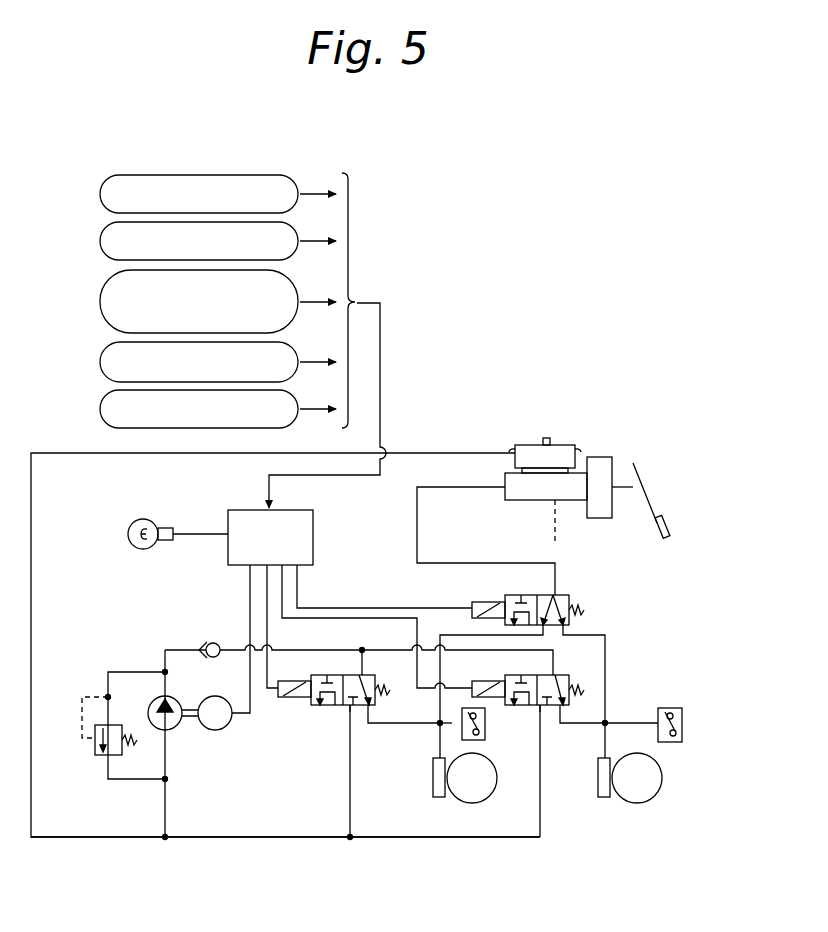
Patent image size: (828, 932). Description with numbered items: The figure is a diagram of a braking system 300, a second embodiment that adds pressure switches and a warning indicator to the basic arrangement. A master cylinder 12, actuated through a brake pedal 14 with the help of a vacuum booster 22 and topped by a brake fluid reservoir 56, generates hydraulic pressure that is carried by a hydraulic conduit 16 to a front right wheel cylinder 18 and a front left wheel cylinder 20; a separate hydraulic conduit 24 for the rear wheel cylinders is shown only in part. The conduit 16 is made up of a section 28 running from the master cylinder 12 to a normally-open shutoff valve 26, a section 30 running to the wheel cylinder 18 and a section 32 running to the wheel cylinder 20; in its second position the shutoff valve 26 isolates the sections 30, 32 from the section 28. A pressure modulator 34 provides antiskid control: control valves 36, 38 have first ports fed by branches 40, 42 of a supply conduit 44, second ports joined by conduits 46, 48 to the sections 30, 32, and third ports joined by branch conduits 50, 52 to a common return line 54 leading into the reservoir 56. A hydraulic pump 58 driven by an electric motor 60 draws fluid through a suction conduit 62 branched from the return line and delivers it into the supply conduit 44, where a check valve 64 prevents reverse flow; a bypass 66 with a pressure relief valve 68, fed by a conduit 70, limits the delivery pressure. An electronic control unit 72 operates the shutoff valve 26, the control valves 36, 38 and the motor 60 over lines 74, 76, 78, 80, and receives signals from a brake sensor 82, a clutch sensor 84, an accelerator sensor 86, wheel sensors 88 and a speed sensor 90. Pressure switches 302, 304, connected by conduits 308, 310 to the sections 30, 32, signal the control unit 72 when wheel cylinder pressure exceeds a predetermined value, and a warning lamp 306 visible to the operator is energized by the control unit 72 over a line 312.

The master cylinder 12 is at (510, 500).
The brake pedal 14 is at (666, 520).
The hydraulic conduit 16 is at (509, 485).
The front right wheel cylinder 18 is at (436, 798).
The front left wheel cylinder 20 is at (604, 798).
The vacuum booster 22 is at (602, 518).
The hydraulic conduit 24 is at (552, 521).
The shutoff valve 26 is at (578, 595).
The conduit section 28 is at (406, 510).
The conduit section 30 is at (440, 708).
The conduit section 32 is at (605, 682).
The pressure modulator 34 is at (286, 850).
The control valve 36 is at (332, 712).
The control valve 38 is at (530, 712).
The branch 40 is at (360, 662).
The branch 42 is at (553, 664).
The supply conduit 44 is at (178, 650).
The conduit 46 is at (379, 728).
The conduit 48 is at (582, 724).
The branch conduit 50 is at (350, 800).
The branch conduit 52 is at (540, 820).
The return line 54 is at (31, 592).
The brake fluid reservoir 56 is at (560, 453).
The hydraulic pump 58 is at (171, 728).
The electric motor 60 is at (217, 730).
The suction conduit 62 is at (168, 814).
The check valve 64 is at (215, 638).
The bypass 66 is at (120, 669).
The pressure relief valve 68 is at (90, 758).
The conduit 70 is at (80, 726).
The electronic control unit 72 is at (236, 508).
The line 74 is at (384, 607).
The line 76 is at (273, 689).
The line 78 is at (340, 620).
The line 80 is at (252, 717).
The brake sensor 82 is at (100, 194).
The clutch sensor 84 is at (100, 241).
The accelerator sensor 86 is at (100, 302).
The wheel sensors 88 is at (98, 362).
The speed sensor 90 is at (98, 409).
The braking system 300 is at (646, 644).
The pressure switch 302 is at (480, 742).
The pressure switch 304 is at (664, 742).
The warning lamp 306 is at (144, 518).
The conduit 308 is at (452, 728).
The conduit 310 is at (631, 723).
The line 312 is at (198, 535).